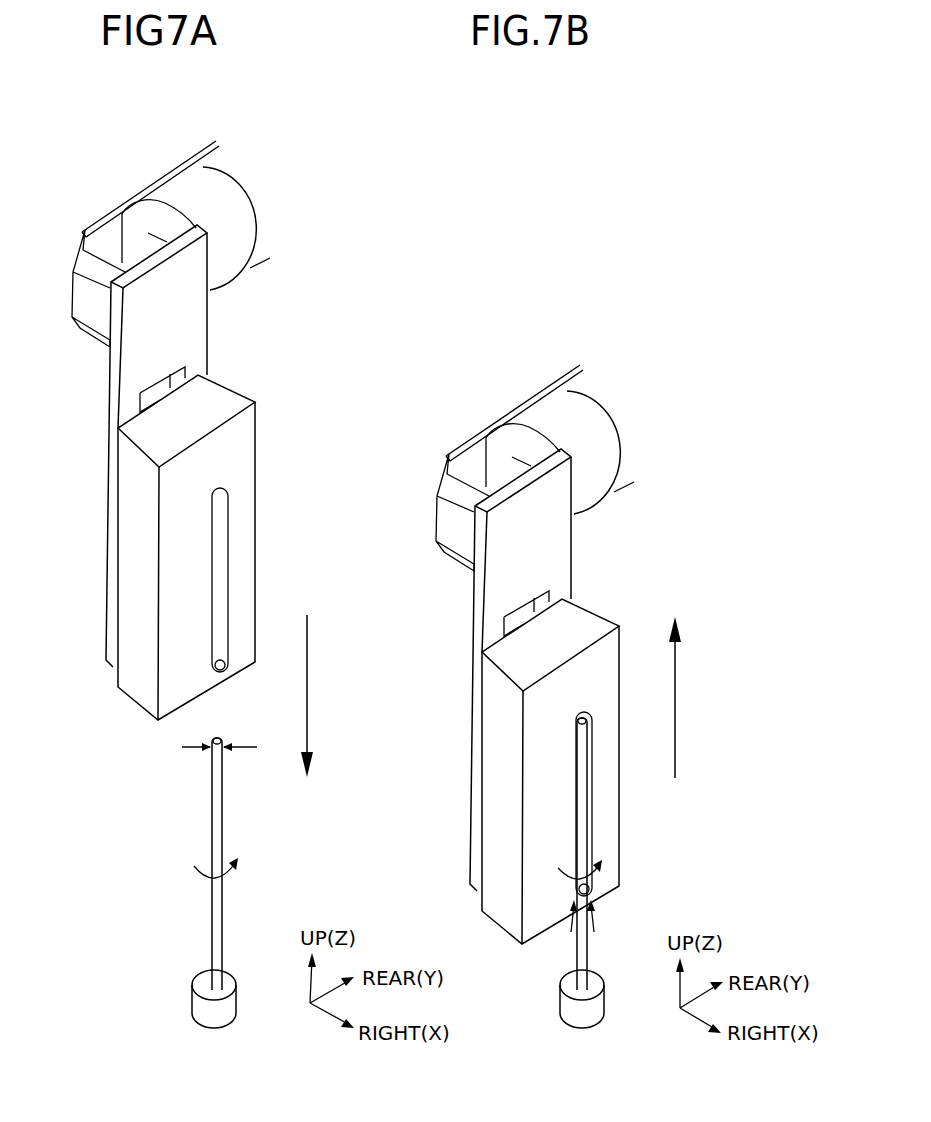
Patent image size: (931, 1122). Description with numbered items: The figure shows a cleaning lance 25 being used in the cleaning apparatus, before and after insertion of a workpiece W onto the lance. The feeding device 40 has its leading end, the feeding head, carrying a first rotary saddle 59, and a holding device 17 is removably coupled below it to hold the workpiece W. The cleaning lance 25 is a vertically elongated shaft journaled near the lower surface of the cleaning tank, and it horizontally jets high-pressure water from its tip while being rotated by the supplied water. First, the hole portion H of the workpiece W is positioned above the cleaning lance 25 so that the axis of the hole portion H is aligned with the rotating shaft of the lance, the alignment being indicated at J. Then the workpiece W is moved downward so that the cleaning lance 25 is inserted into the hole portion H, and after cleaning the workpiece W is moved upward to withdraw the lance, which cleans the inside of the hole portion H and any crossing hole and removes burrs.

In FIG. 7A, the feeding device 40 is at (166, 160).
In FIG. 7B, the feeding device 40 is at (514, 376).
In FIG. 7A, the first rotary saddle 59 is at (247, 242).
In FIG. 7B, the first rotary saddle 59 is at (600, 452).
In FIG. 7A, the holding device 17 is at (107, 380).
In FIG. 7B, the holding device 17 is at (481, 670).
In FIG. 7A, the workpiece W is at (242, 389).
In FIG. 7B, the workpiece W is at (579, 751).
In FIG. 7A, the hole portion H is at (229, 579).
In FIG. 7B, the hole portion H is at (595, 805).
In FIG. 7A, the cleaning lance 25 is at (212, 802).
In FIG. 7B, the cleaning lance 25 is at (595, 833).
In FIG. 7A, the gap J is at (235, 743).
In FIG. 7B, the gap J is at (594, 915).